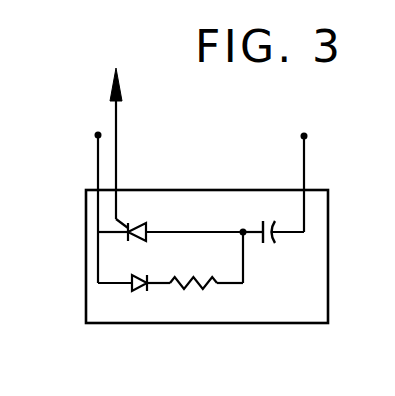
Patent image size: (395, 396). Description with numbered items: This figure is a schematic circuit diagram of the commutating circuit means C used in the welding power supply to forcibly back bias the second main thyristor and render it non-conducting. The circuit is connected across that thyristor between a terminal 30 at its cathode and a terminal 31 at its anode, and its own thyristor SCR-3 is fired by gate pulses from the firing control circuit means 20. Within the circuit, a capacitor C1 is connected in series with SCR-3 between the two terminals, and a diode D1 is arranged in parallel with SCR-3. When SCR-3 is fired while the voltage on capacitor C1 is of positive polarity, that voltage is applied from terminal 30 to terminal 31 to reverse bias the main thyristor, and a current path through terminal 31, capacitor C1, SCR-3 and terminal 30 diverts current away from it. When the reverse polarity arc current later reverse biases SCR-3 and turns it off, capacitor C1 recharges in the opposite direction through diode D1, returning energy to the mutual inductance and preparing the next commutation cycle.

The firing control circuit means 20 is at (120, 133).
The terminal 30 is at (97, 134).
The terminal 31 is at (304, 136).
The thyristor SCR-3 is at (170, 218).
The diode D1 is at (130, 289).
The capacitor C1 is at (263, 237).
The commutating circuit means C is at (243, 323).